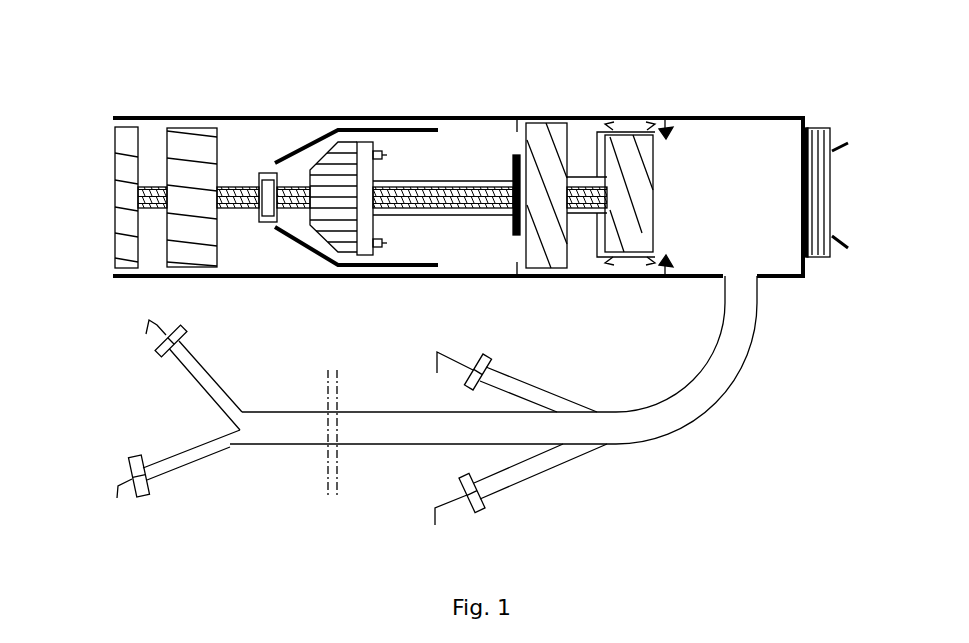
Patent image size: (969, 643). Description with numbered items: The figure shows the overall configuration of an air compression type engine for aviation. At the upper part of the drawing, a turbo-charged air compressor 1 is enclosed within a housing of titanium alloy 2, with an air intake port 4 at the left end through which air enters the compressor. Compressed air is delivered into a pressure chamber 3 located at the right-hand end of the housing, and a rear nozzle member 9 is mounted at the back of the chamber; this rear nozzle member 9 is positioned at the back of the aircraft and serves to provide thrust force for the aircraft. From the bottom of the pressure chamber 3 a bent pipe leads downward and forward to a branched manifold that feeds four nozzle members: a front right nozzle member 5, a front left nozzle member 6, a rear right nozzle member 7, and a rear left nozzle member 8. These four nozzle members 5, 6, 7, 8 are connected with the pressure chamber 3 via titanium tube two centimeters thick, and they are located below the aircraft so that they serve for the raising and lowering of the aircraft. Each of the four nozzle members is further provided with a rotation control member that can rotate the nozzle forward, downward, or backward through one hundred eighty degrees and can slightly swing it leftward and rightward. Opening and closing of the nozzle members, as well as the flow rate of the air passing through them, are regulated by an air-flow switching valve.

The turbo-charged air compressor 1 is at (395, 117).
The housing of titanium alloy 2 is at (705, 116).
The pressure chamber 3 is at (700, 188).
The air intake port 4 is at (130, 170).
The front right nozzle member 5 is at (150, 493).
The front left nozzle member 6 is at (180, 340).
The rear right nozzle member 7 is at (485, 503).
The rear left nozzle member 8 is at (492, 358).
The rear nozzle member 9 is at (812, 195).